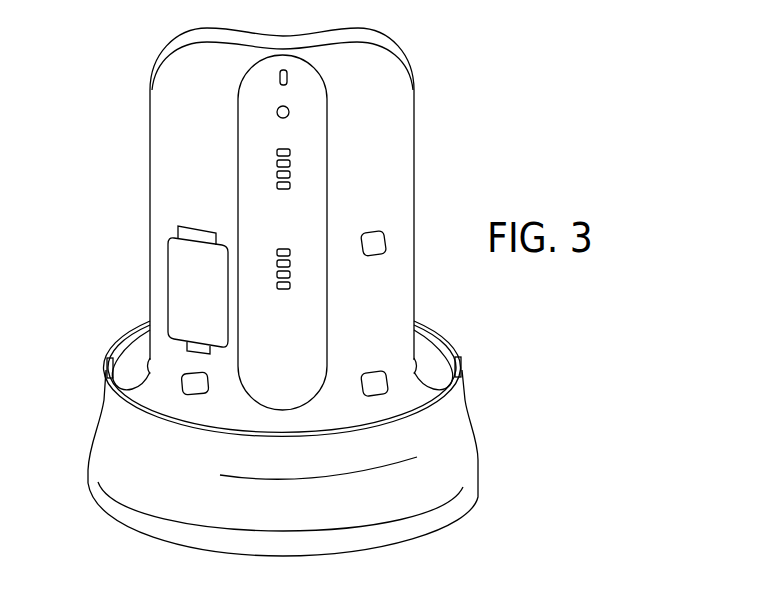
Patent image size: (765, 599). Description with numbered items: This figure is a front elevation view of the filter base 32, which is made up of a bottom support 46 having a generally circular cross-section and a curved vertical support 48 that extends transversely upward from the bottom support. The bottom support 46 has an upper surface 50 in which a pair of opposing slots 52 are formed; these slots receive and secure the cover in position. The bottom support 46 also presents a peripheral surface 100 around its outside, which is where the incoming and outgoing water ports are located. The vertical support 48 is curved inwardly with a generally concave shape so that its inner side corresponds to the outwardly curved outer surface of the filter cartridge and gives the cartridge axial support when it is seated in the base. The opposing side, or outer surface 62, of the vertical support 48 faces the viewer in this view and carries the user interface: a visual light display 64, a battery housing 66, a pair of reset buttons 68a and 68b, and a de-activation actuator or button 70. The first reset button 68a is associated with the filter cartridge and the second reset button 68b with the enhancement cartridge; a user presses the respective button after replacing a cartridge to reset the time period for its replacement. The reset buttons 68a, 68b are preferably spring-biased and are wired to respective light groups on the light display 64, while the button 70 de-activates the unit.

The filter base 32 is at (118, 144).
The bottom support 46 is at (480, 443).
The vertical support 48 is at (415, 142).
The upper surface 50 is at (141, 350).
The slots 52 is at (105, 362).
The outer surface 62 is at (381, 293).
The visual light display 64 is at (263, 132).
The battery housing 66 is at (192, 290).
The first reset button 68a is at (188, 394).
The second reset button 68b is at (370, 232).
The de-activation actuator or button 70 is at (378, 372).
The peripheral surface 100 is at (378, 497).